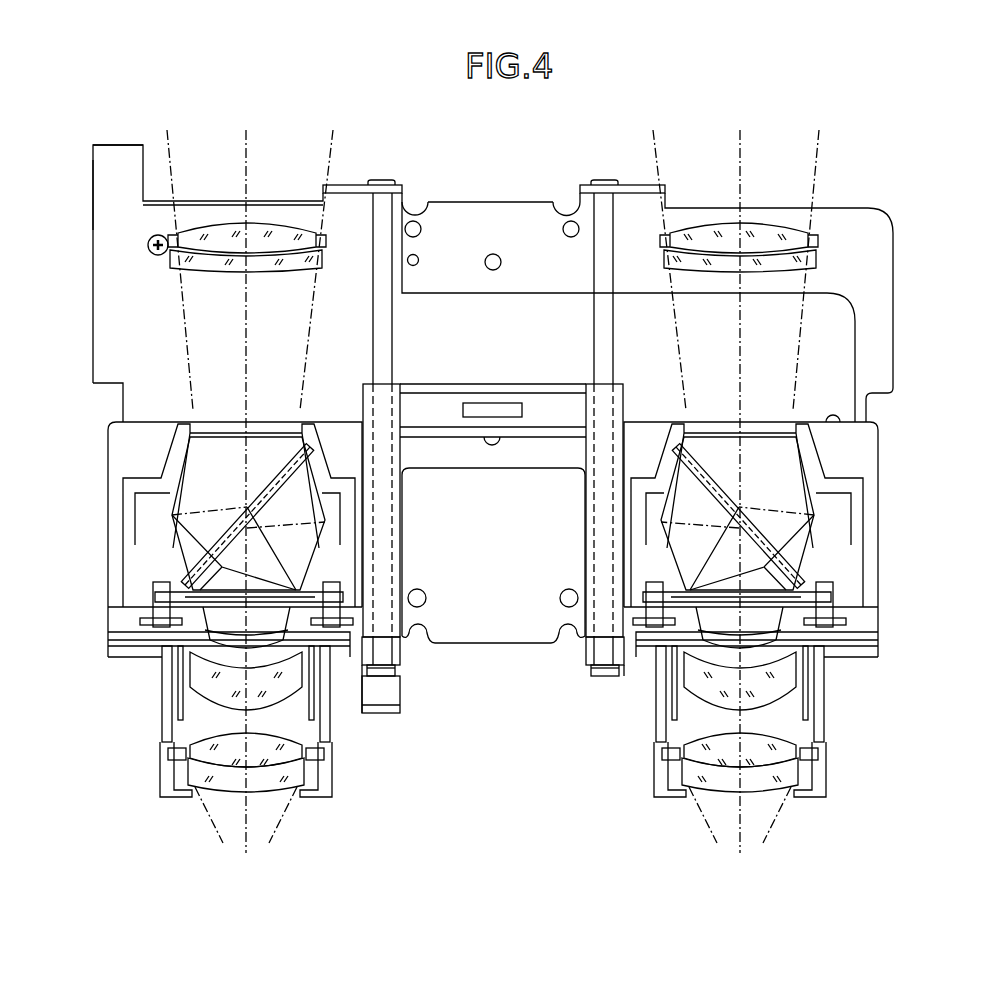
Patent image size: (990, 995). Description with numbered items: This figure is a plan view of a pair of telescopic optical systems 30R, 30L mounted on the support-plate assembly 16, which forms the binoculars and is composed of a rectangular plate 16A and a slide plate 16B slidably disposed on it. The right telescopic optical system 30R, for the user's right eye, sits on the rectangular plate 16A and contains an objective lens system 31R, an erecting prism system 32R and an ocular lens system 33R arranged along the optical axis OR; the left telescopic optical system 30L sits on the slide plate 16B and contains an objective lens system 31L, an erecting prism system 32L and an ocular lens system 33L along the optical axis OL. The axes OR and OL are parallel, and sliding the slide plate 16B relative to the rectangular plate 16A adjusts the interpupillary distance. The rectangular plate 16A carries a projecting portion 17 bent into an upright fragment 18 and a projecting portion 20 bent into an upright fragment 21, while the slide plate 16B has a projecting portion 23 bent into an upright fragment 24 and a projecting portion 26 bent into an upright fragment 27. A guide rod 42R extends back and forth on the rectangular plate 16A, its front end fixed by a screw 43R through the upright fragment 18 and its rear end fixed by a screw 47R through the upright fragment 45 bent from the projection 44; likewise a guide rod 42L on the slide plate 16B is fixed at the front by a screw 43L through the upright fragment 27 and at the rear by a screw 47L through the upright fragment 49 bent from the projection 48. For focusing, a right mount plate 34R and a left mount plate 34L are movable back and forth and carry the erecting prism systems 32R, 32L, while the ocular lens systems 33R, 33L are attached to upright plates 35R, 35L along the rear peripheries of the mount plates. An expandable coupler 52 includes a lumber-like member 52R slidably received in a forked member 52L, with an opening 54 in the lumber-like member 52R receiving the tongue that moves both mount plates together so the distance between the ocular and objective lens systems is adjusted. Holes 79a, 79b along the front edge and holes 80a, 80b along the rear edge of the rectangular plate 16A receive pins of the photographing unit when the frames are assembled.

The support-plate assembly 16 is at (480, 196).
The rectangular plate 16A is at (900, 262).
The slide plate 16B is at (88, 370).
The projecting portion 17 is at (575, 202).
The upright fragment 18 is at (640, 186).
The projecting portion 20 is at (398, 700).
The upright fragment 21 is at (380, 714).
The projecting portion 23 is at (95, 180).
The upright fragment 24 is at (118, 145).
The projecting portion 26 is at (405, 198).
The upright fragment 27 is at (345, 185).
The left telescopic optical system 30L is at (208, 222).
The right telescopic optical system 30R is at (748, 222).
The objective lens system 31L is at (166, 262).
The objective lens system 31R is at (822, 258).
The erecting prism system 32L is at (258, 478).
The erecting prism system 32R is at (780, 476).
The ocular lens system 33L is at (264, 796).
The ocular lens system 33R is at (760, 796).
The left mount plate 34L is at (110, 455).
The right mount plate 34R is at (878, 458).
The upright plate 35L is at (108, 640).
The upright plate 35R is at (880, 644).
The guide rod 42L is at (389, 350).
The guide rod 42R is at (611, 350).
The screw 43L is at (382, 182).
The screw 43R is at (605, 182).
The projection 44 is at (590, 650).
The upright fragment 45 is at (622, 676).
The screw 47L is at (382, 676).
The screw 47R is at (600, 678).
The projection 48 is at (398, 650).
The upright fragment 49 is at (360, 668).
The expandable coupler 52 is at (492, 382).
The forked member 52L is at (432, 432).
The lumber-like member 52R is at (560, 402).
The opening 54 is at (494, 410).
The hole 79a is at (566, 238).
The hole 79b is at (421, 234).
The hole 80a is at (567, 590).
The hole 80b is at (420, 590).
The optical axis OL is at (254, 342).
The optical axis OR is at (744, 346).